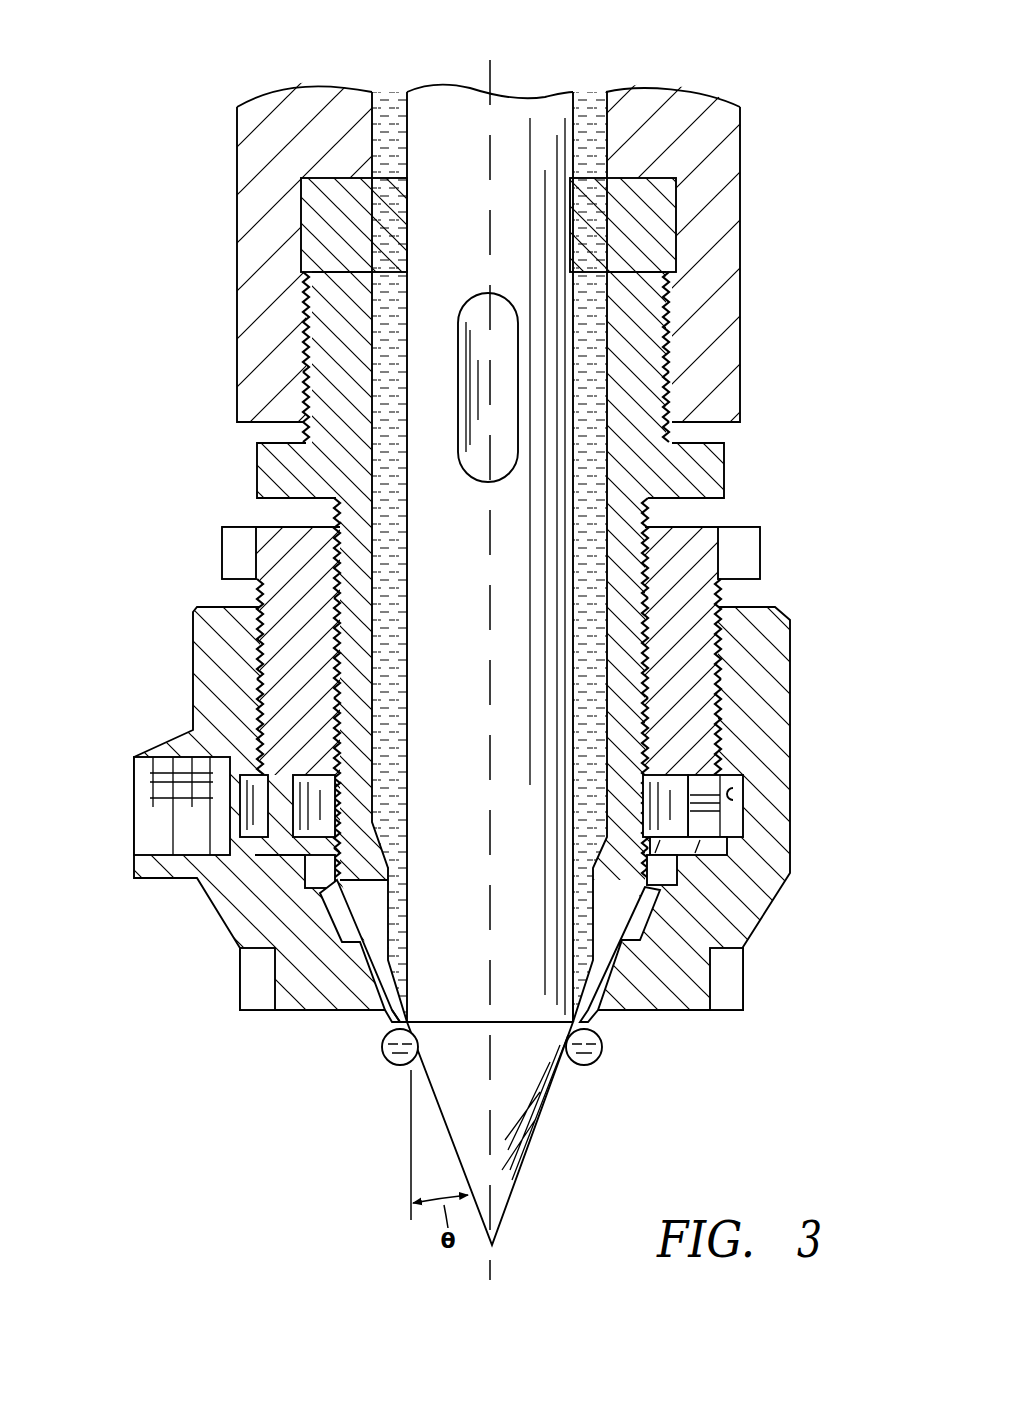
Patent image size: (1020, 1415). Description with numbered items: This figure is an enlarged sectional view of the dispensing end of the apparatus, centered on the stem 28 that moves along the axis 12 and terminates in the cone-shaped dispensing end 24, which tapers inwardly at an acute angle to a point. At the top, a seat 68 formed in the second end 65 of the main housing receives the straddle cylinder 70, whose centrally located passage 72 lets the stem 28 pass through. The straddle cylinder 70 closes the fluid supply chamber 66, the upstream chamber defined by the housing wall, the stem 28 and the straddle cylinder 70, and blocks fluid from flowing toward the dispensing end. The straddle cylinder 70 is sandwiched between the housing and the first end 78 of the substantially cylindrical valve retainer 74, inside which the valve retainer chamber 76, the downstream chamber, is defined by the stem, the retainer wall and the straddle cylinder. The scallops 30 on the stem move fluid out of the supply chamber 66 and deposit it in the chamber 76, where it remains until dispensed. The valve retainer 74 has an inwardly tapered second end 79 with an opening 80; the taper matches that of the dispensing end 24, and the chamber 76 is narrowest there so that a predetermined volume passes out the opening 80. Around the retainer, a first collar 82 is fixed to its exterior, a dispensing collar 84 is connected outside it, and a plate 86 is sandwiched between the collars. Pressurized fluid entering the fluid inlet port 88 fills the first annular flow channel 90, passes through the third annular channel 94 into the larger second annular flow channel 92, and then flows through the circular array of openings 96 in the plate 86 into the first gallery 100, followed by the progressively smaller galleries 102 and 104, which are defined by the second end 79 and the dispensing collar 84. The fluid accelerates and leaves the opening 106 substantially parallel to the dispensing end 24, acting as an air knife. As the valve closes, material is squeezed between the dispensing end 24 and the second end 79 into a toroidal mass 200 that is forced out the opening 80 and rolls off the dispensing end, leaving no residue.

The axis 12 is at (490, 1267).
The dispensing end 24 is at (535, 1133).
The stem 28 is at (530, 118).
The scallops 30 is at (460, 348).
The second end 65 is at (248, 322).
The fluid supply chamber 66 is at (372, 107).
The seat 68 is at (633, 178).
The straddle cylinder 70 is at (318, 228).
The passage 72 is at (405, 220).
The valve retainer 74 is at (638, 450).
The valve retainer chamber 76 is at (385, 445).
The first end 78 is at (635, 345).
The second end 79 is at (375, 893).
The opening 80 is at (572, 1018).
The first collar 82 is at (695, 560).
The dispensing collar 84 is at (770, 678).
The plate 86 is at (703, 857).
The fluid inlet port 88 is at (148, 856).
The first annular flow channel 90 is at (735, 795).
The second annular flow channel 92 is at (320, 790).
The third annular channel 94 is at (240, 811).
The openings 96 is at (667, 822).
The first gallery 100 is at (307, 885).
The second gallery 102 is at (337, 908).
The third gallery 104 is at (402, 1024).
The opening 106 is at (607, 1022).
The toroidal mass 200 is at (392, 1062).